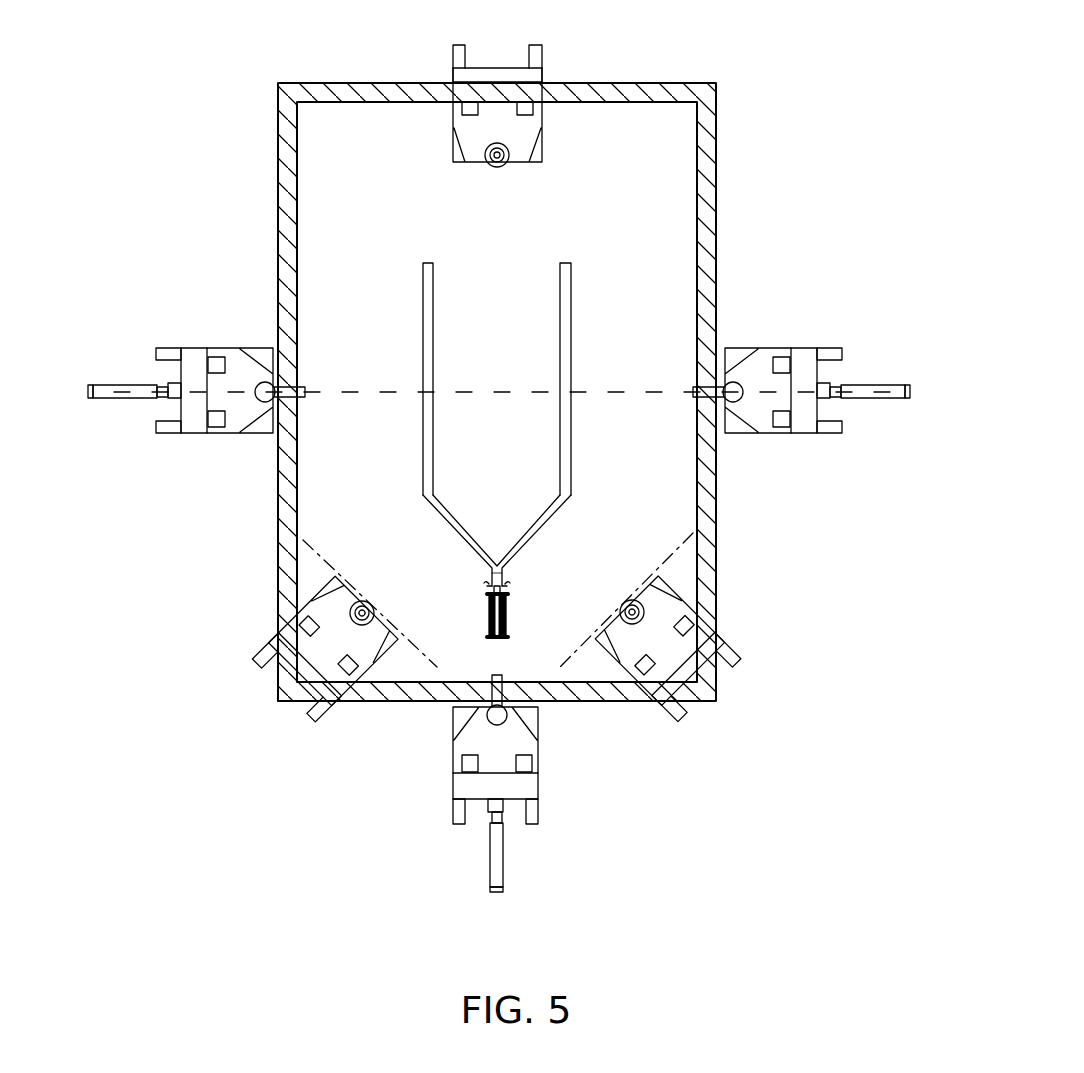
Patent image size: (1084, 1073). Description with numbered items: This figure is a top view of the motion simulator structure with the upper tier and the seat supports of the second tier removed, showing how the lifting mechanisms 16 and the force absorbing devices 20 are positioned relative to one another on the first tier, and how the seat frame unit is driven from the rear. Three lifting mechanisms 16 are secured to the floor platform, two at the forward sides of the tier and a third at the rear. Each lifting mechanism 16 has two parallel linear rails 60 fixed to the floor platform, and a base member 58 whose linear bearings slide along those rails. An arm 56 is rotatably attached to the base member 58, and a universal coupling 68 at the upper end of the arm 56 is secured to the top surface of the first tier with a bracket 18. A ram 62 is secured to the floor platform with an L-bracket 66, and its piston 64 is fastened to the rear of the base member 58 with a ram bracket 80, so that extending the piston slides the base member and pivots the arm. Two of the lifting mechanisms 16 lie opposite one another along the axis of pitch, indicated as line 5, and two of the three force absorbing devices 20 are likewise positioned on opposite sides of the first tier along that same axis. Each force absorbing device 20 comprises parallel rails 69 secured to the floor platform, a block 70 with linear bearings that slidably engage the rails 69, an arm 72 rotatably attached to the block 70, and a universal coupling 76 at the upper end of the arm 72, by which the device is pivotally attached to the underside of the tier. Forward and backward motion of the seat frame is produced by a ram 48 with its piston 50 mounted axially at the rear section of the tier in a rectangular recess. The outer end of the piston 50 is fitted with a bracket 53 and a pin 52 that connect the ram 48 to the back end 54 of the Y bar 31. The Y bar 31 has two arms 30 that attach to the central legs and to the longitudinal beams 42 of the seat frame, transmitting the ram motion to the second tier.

The line 5— 5 is at (88, 392).
The lifting mechanism 16 is at (494, 606).
The bracket 18 is at (297, 381).
The force absorbing device 20 is at (496, 386).
The arm 30 is at (457, 540).
The Y bar 31 is at (502, 459).
The longitudinal beam 42 is at (422, 466).
The ram 48 is at (488, 621).
The piston 50 is at (493, 592).
The pin 52 is at (489, 578).
The bracket 53 is at (503, 588).
The back end 54 is at (505, 578).
The arm 56 is at (235, 426).
The base member 58 is at (196, 356).
The linear rail 60 is at (167, 346).
The ram 62 is at (115, 403).
The piston 64 is at (161, 398).
The L-bracket 66 is at (93, 401).
The universal coupling 68 is at (266, 382).
The parallel rail 69 is at (465, 56).
The block 70 is at (545, 79).
The arm 72 is at (531, 119).
The universal coupling 76 is at (491, 164).
The ram bracket 80 is at (175, 381).